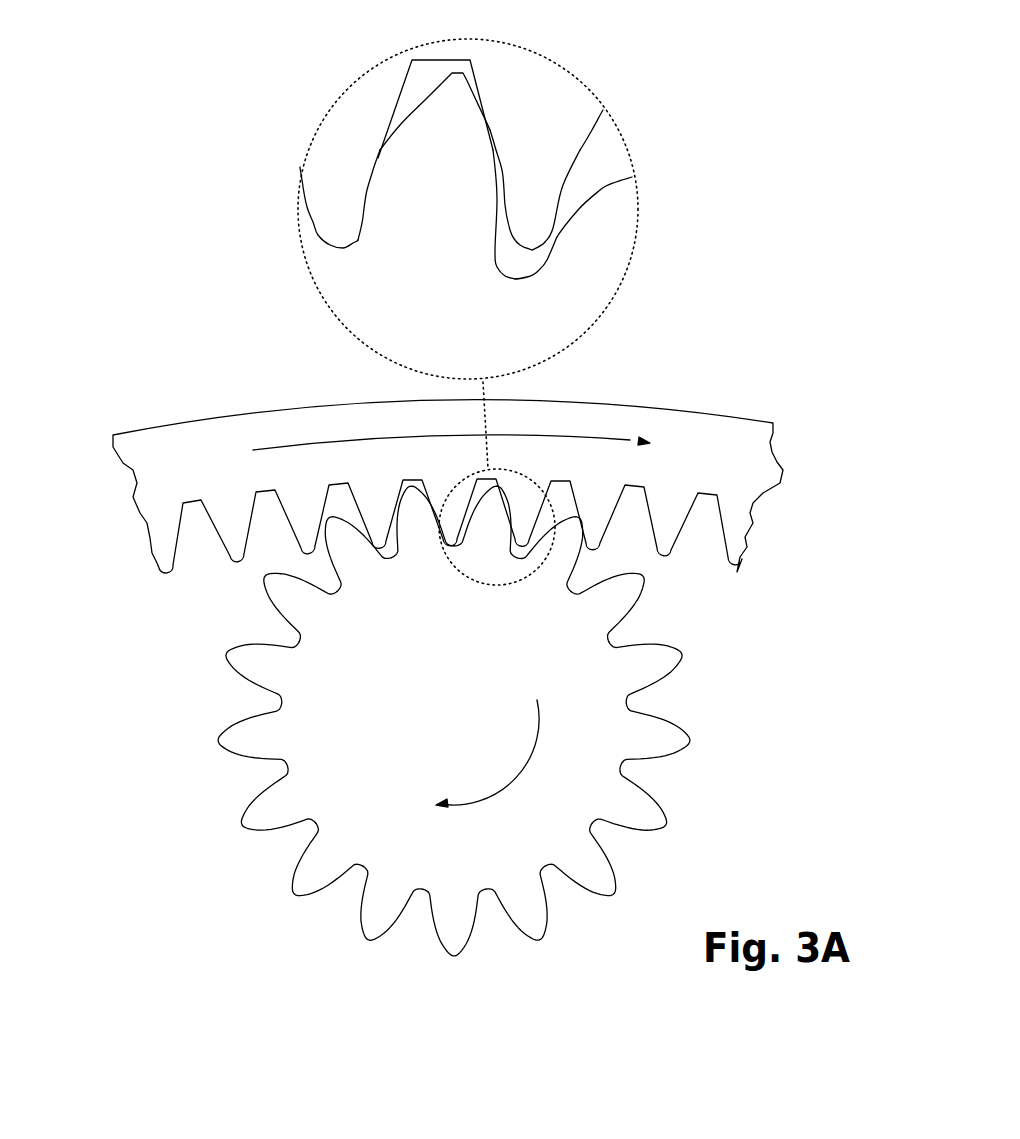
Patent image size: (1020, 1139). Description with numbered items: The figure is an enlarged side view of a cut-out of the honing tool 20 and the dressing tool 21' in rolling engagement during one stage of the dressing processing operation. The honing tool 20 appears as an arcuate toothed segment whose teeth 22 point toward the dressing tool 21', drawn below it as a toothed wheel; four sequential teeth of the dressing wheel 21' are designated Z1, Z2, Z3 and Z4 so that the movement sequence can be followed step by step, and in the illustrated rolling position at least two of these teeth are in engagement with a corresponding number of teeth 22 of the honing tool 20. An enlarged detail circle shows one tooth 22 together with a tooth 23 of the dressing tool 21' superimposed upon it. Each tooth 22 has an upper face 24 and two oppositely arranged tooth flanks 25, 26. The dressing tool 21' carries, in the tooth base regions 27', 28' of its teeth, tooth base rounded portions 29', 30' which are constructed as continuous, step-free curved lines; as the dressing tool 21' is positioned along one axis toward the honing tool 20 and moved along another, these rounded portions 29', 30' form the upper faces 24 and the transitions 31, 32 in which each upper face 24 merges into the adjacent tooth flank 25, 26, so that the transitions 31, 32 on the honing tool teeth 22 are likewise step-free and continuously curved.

The honing tool 20 is at (228, 485).
The teeth of the honing tool 22 is at (323, 150).
The pinion 23 is at (253, 667).
The dressing tool 21' is at (349, 655).
The first dressing tool tooth Z1 is at (352, 553).
The second dressing tool tooth Z2 is at (419, 523).
The third dressing tool tooth Z3 is at (489, 525).
The fourth dressing tool tooth Z4 is at (552, 554).
The upper face 24 is at (545, 267).
The tooth flank 25 is at (595, 155).
The tooth flank 26 is at (485, 128).
The tooth base region 27' is at (461, 246).
The tooth base region 28' is at (287, 252).
The tooth base rounded portion 29' is at (569, 317).
The tooth base rounded portion 30' is at (273, 207).
The transition 31 is at (516, 222).
The transition 32 is at (553, 220).